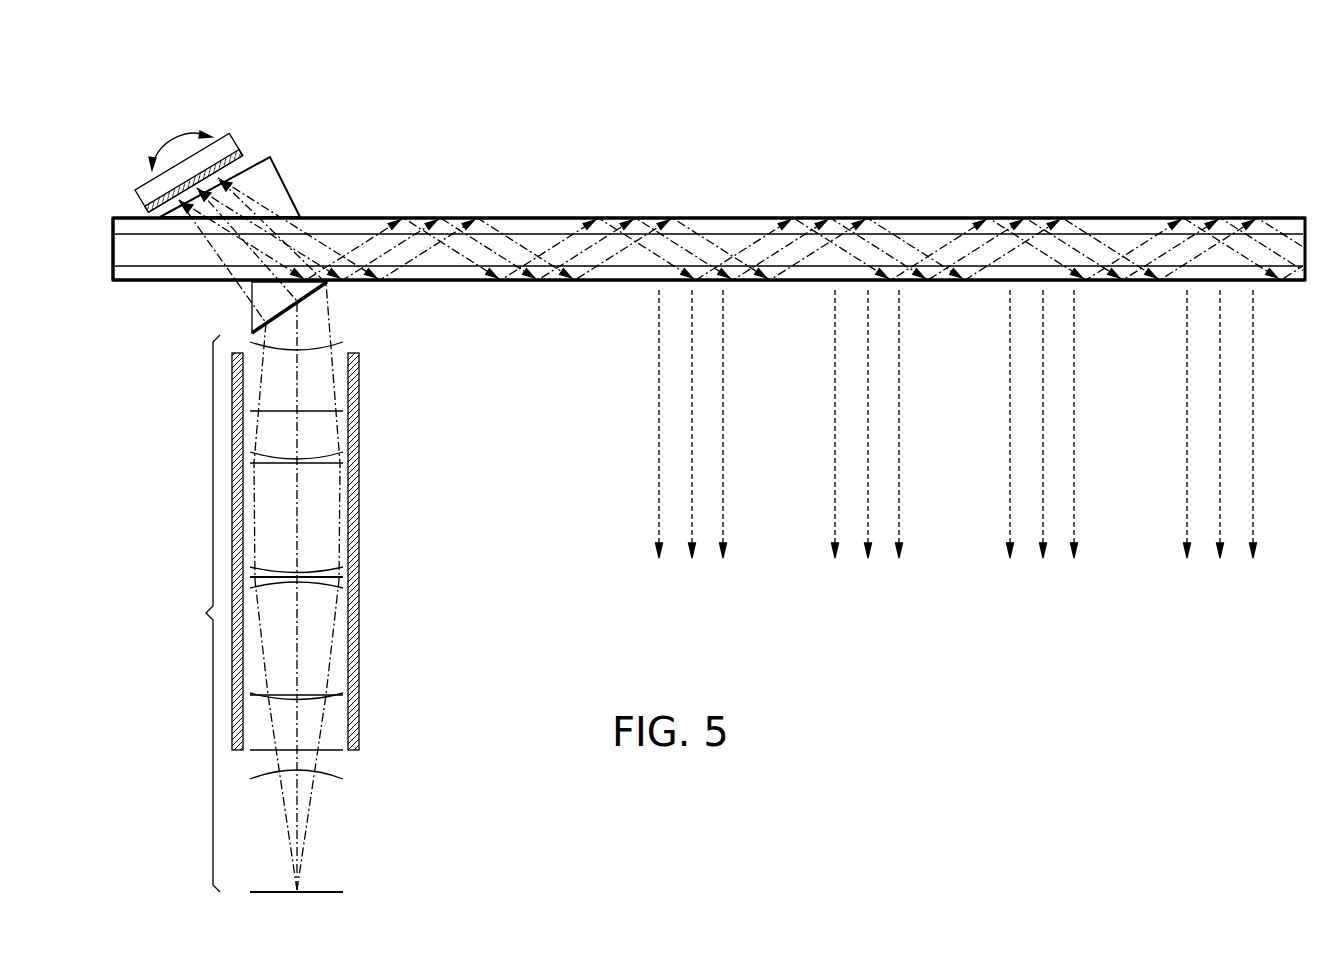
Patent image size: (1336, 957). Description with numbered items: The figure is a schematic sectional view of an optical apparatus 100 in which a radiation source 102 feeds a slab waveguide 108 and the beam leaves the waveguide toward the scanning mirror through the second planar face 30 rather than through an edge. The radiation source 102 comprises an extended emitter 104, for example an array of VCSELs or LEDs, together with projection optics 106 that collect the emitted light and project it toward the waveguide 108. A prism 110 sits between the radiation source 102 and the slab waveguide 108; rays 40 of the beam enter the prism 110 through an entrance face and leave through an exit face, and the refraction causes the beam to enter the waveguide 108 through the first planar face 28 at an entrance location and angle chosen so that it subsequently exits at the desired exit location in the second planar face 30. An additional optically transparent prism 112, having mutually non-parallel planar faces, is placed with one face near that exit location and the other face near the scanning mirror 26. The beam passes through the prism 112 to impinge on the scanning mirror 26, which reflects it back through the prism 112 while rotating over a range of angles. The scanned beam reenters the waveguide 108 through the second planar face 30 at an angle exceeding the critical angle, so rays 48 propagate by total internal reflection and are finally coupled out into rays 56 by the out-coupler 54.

The optical apparatus 100 is at (372, 93).
The scanning mirror 26 is at (232, 151).
The optically transparent prism 112 is at (282, 186).
The rays 48 is at (507, 257).
The out-coupler 54 is at (935, 218).
The second planar face 30 is at (1276, 218).
The first planar face 28 is at (1289, 281).
The slab waveguide 108 is at (136, 281).
The prism 110 is at (250, 317).
The rays 40 is at (300, 325).
The projection optics 106 is at (360, 503).
The radiation source 102 is at (205, 613).
The extended emitter 104 is at (326, 892).
The rays 56 is at (835, 493).